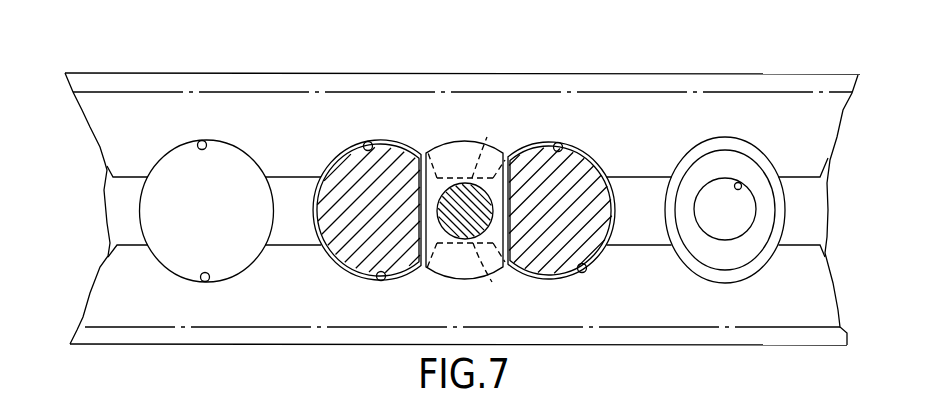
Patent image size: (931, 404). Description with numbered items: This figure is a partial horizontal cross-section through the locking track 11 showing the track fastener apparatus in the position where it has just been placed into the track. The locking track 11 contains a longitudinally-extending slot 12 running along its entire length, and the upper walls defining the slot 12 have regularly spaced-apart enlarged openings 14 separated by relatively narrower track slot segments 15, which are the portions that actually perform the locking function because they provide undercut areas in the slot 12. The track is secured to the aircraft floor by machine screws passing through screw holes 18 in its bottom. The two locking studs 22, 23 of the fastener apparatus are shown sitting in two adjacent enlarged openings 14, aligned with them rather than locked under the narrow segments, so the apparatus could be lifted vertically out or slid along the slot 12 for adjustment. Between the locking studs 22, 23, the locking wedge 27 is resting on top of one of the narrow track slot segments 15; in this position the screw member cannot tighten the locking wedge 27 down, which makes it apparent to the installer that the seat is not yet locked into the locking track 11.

The locking track 11 is at (56, 72).
The longitudinally-extending slot 12 is at (288, 200).
The enlarged openings 14 is at (197, 144).
The narrow track slot segments 15 is at (486, 148).
The screw holes 18 is at (740, 183).
The locking stud 22 is at (359, 196).
The locking stud 23 is at (574, 177).
The locking wedge 27 is at (438, 156).